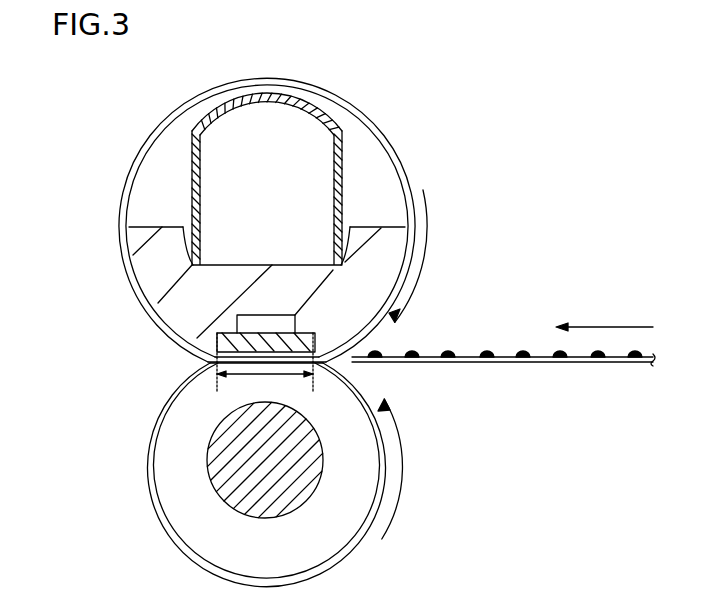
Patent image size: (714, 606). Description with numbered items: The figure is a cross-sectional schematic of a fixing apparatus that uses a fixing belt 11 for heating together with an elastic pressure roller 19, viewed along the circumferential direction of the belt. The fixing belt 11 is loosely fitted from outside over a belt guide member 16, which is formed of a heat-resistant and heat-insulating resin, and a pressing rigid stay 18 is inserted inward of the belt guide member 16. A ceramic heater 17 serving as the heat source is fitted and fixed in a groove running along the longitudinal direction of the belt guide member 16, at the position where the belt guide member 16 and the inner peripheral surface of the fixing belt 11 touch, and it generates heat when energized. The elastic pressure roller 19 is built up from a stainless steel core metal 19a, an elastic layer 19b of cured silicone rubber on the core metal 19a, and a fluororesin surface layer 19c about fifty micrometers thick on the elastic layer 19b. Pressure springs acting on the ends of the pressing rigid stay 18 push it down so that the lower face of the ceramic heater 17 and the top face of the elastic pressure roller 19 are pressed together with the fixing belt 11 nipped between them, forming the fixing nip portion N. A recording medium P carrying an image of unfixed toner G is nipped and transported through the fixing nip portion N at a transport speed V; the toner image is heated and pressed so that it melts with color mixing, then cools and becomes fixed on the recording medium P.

The fixing belt 11 is at (188, 95).
The pressing rigid stay 18 is at (190, 139).
The belt guide member 16 is at (152, 223).
The ceramic heater 17 is at (212, 338).
The elastic pressure roller 19 is at (199, 475).
The core metal 19a is at (213, 430).
The elastic layer 19b is at (158, 468).
The surface layer 19c is at (157, 516).
The fixing nip portion N is at (233, 382).
The recording medium P is at (503, 364).
The unfixed toner G is at (487, 352).
The transport speed V is at (604, 310).